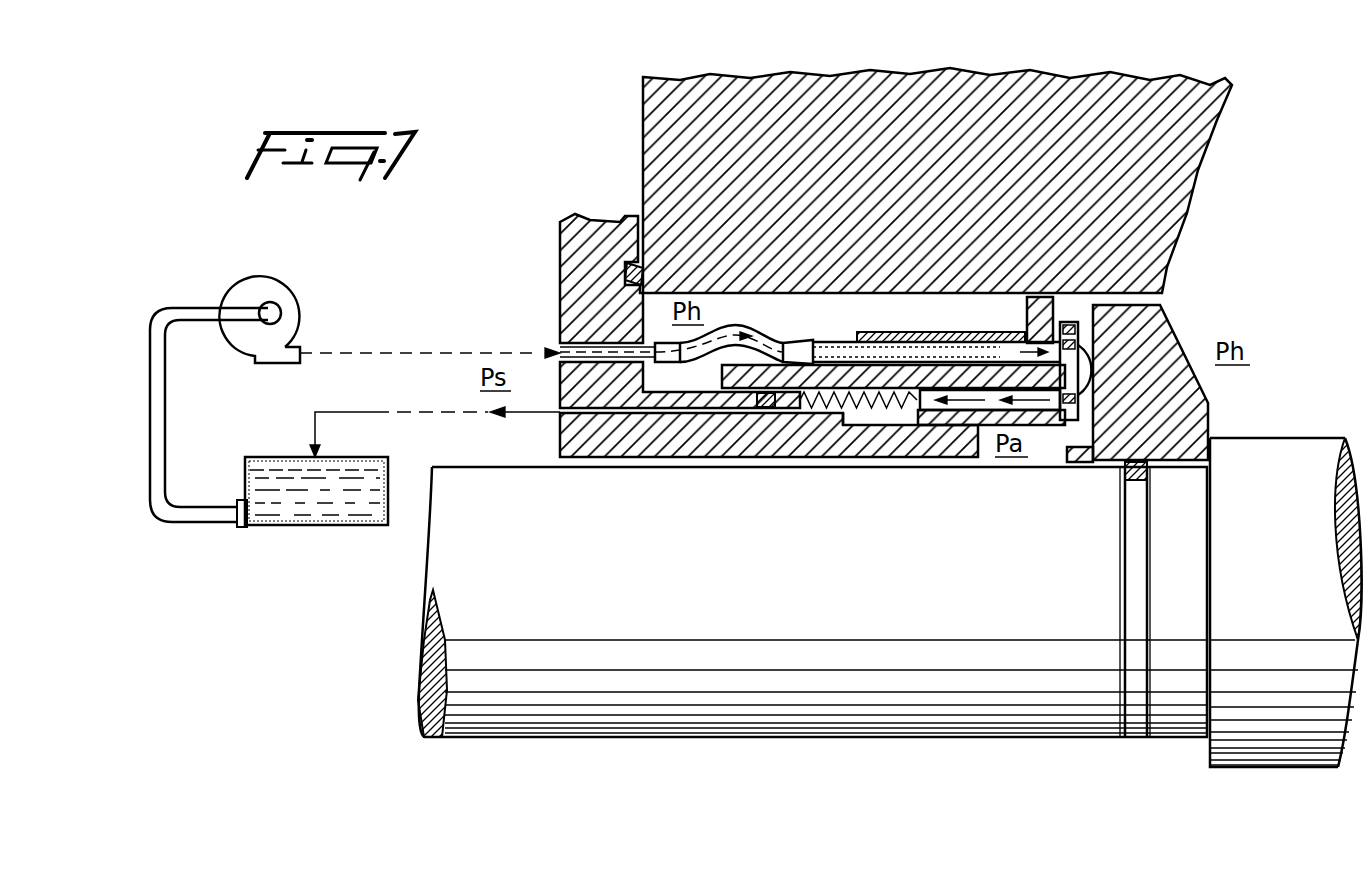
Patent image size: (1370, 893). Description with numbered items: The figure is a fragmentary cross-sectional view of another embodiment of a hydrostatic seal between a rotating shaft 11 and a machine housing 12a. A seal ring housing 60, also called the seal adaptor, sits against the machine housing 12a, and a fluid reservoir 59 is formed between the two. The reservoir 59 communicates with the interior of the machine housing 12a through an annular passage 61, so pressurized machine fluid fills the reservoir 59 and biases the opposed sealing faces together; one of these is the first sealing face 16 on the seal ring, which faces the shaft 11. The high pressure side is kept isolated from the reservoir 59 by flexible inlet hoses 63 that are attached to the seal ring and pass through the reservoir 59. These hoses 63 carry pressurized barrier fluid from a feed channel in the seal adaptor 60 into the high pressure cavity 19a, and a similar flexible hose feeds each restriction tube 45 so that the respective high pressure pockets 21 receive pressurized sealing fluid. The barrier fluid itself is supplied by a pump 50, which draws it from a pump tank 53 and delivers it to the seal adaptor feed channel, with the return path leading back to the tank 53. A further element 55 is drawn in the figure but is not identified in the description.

The shaft 11 is at (528, 700).
The machine housing 12a is at (1210, 123).
The first sealing face 16 is at (1081, 348).
The high pressure cavity 19a is at (1174, 262).
The high pressure pockets 21 is at (1087, 330).
The restriction tube 45 is at (905, 352).
The pump 50 is at (268, 287).
The pump tank 53 is at (300, 527).
The pressure chamber 55 is at (1022, 402).
The fluid reservoir 59 is at (653, 322).
The seal ring housing 60 is at (560, 237).
The annular passage 61 is at (1040, 300).
The flexible inlet hoses 63 is at (707, 360).